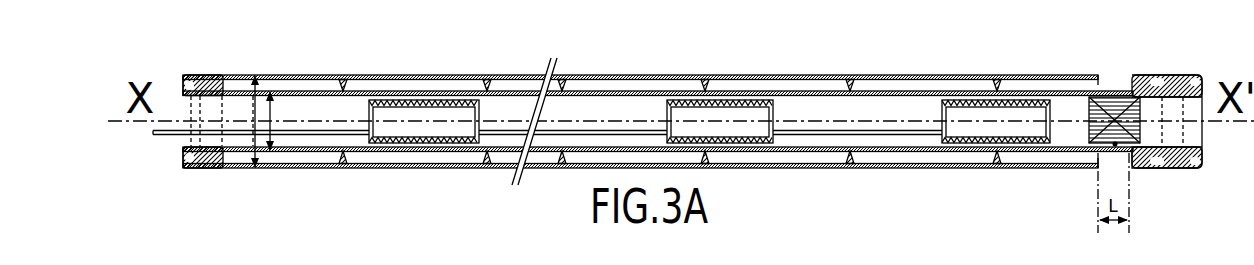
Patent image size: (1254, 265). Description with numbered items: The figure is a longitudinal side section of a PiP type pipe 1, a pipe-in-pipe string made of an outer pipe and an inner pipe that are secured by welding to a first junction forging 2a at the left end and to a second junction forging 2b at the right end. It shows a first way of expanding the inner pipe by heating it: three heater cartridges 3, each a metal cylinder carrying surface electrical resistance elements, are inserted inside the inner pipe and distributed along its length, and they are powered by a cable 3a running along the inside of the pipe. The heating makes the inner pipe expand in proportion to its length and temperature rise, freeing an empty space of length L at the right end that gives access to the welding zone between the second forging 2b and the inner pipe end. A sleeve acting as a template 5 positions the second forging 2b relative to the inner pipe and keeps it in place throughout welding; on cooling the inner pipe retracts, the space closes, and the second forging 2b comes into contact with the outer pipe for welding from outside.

The PiP type pipe 1 is at (891, 63).
The first junction forging 2a is at (208, 177).
The second junction forging 2b is at (1168, 178).
The heater cartridge 3 is at (733, 100).
The cable 3a is at (160, 136).
The template 5 is at (1115, 97).